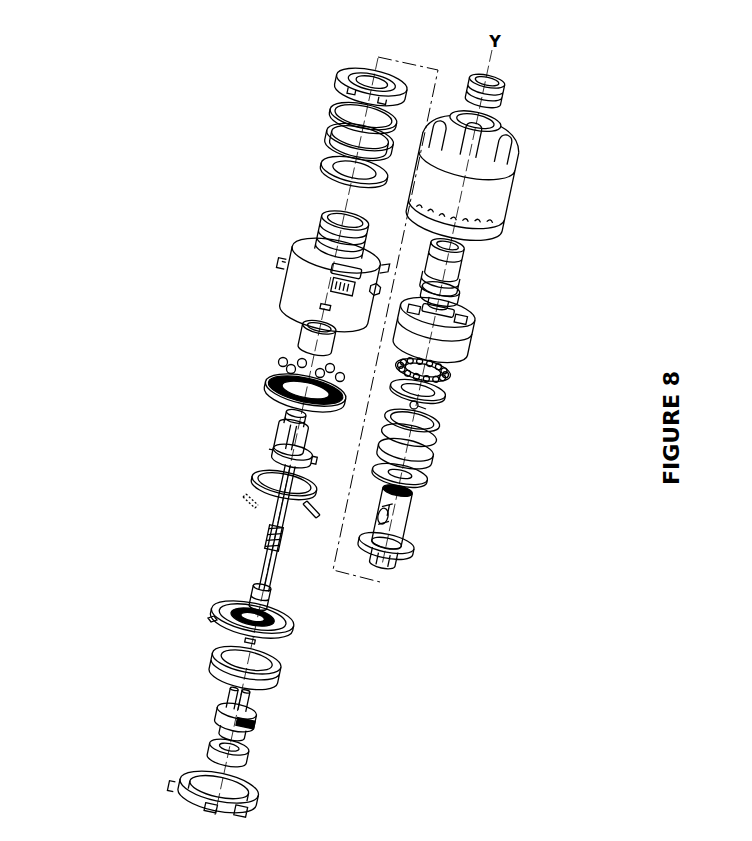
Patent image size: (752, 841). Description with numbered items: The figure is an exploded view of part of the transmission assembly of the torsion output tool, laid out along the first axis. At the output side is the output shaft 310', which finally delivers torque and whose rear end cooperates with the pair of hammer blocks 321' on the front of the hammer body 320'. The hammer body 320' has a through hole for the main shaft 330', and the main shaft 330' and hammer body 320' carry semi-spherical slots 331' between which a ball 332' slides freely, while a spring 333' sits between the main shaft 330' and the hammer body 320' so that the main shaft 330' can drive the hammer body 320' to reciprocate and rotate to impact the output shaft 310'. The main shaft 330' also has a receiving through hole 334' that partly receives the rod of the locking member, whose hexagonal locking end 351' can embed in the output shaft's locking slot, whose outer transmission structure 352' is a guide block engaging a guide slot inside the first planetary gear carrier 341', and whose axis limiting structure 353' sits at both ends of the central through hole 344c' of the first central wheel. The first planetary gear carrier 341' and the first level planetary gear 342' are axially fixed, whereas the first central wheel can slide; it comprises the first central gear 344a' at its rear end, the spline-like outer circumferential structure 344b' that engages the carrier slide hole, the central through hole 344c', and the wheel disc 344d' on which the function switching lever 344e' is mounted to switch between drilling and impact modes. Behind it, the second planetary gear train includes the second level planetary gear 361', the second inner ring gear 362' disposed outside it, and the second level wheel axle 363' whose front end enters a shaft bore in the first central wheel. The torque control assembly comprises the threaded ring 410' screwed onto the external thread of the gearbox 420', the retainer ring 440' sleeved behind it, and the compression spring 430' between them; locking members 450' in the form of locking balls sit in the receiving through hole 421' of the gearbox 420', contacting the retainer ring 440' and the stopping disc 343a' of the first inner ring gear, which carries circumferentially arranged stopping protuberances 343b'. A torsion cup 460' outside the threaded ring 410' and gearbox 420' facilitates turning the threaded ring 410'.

The threaded ring 410' is at (241, 70).
The compression spring 430' is at (236, 120).
The retainer ring 440' is at (231, 155).
The receiving through hole 421' is at (221, 214).
The gearbox 420' is at (232, 283).
The locking members 450' is at (209, 318).
The stopping protuberances 343b' is at (206, 351).
The stopping disc 343a' is at (208, 375).
The first planetary gear carrier 341' is at (192, 417).
The first level planetary gear 342' is at (196, 438).
The locking end 351' is at (196, 467).
The outer transmission structure 352' is at (178, 509).
The axis limiting structure 353' is at (172, 552).
The central through hole 344c' is at (164, 579).
The outer circumferential structure 344b' is at (171, 581).
The first central gear 344a' is at (182, 599).
The wheel disc 344d' is at (177, 605).
The function switching lever 344e' is at (142, 610).
The second inner ring gear 362' is at (178, 659).
The second level wheel axle 363' is at (161, 683).
The second level planetary gear 361' is at (165, 712).
The torsion cup 460' is at (522, 175).
The output shaft 310' is at (530, 267).
The hammer blocks 321' is at (530, 293).
The hammer body 320' is at (516, 329).
The ball 332' is at (515, 378).
The spring 333' is at (508, 429).
The receiving through hole 334' is at (506, 457).
The semi-spherical slots 331' is at (506, 499).
The main shaft 330' is at (498, 525).